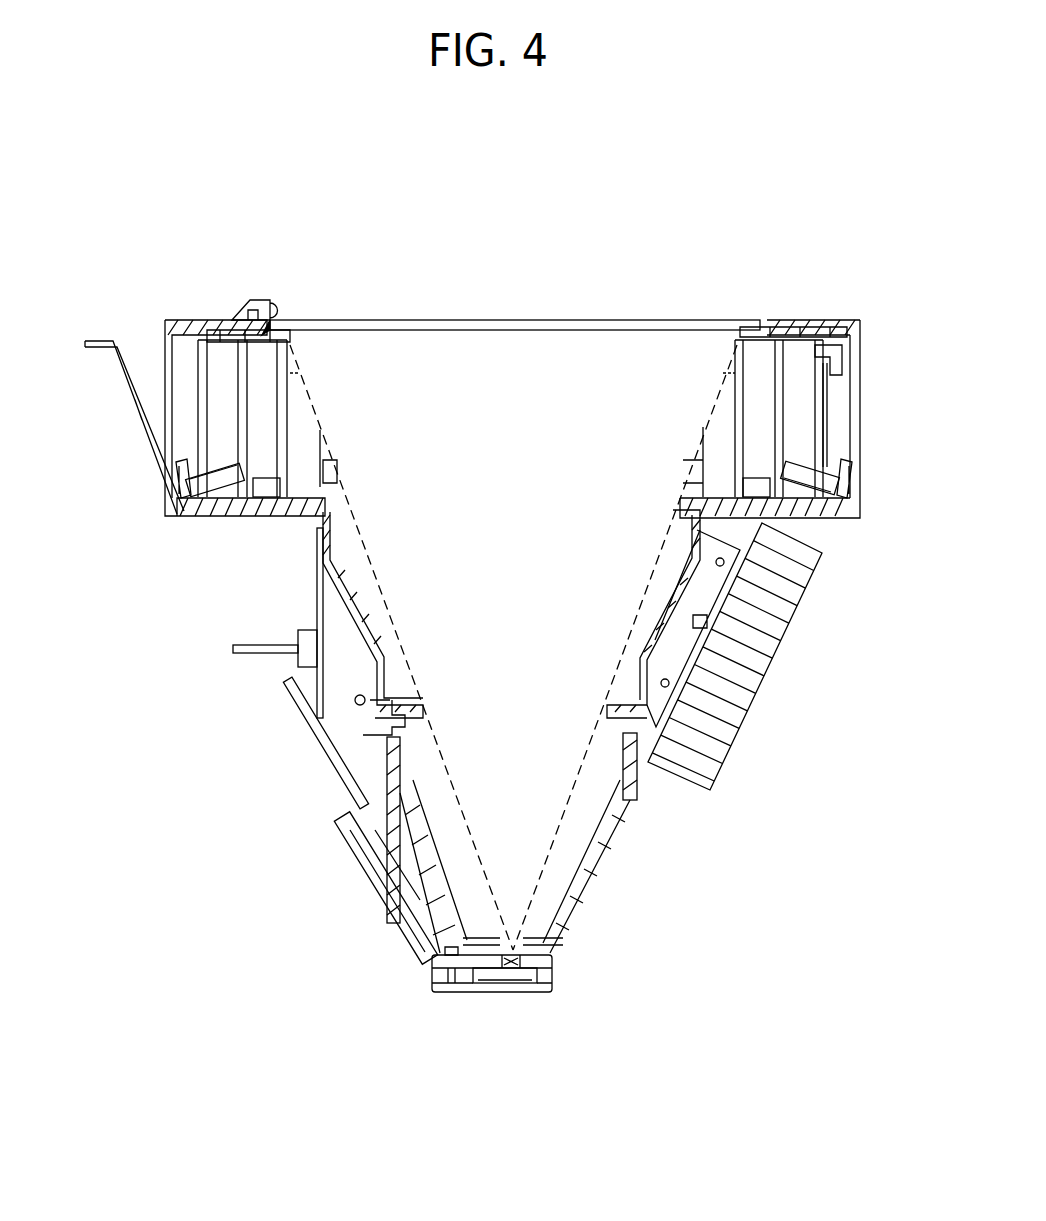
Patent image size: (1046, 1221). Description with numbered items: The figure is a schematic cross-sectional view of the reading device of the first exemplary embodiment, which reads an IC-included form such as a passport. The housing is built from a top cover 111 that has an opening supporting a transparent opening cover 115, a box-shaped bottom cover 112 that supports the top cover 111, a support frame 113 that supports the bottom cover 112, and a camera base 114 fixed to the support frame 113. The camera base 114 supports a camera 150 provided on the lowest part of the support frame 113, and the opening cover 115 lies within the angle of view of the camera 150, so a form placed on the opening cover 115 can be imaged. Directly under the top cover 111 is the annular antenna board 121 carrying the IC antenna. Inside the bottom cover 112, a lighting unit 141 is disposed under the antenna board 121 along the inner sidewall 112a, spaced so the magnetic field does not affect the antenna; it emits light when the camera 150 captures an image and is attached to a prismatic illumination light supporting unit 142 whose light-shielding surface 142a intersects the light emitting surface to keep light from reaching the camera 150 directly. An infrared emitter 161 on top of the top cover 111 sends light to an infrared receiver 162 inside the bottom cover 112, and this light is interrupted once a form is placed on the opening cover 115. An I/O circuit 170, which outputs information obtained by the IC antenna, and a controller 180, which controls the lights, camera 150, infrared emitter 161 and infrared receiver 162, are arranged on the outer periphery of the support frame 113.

The top cover 111 is at (817, 322).
The bottom cover 112 is at (869, 439).
The inner sidewall 112a is at (861, 395).
The support frame 113 is at (140, 418).
The camera base 114 is at (467, 987).
The opening cover 115 is at (700, 323).
The antenna board 121 is at (222, 327).
The lighting unit 141 is at (183, 470).
The illumination light supporting unit 142 is at (222, 500).
The light-shielding surface 142a is at (217, 467).
The camera 150 is at (527, 975).
The infrared emitter 161 is at (258, 298).
The infrared receiver 162 is at (830, 362).
The I/O circuit 170 is at (307, 660).
The controller 180 is at (728, 738).